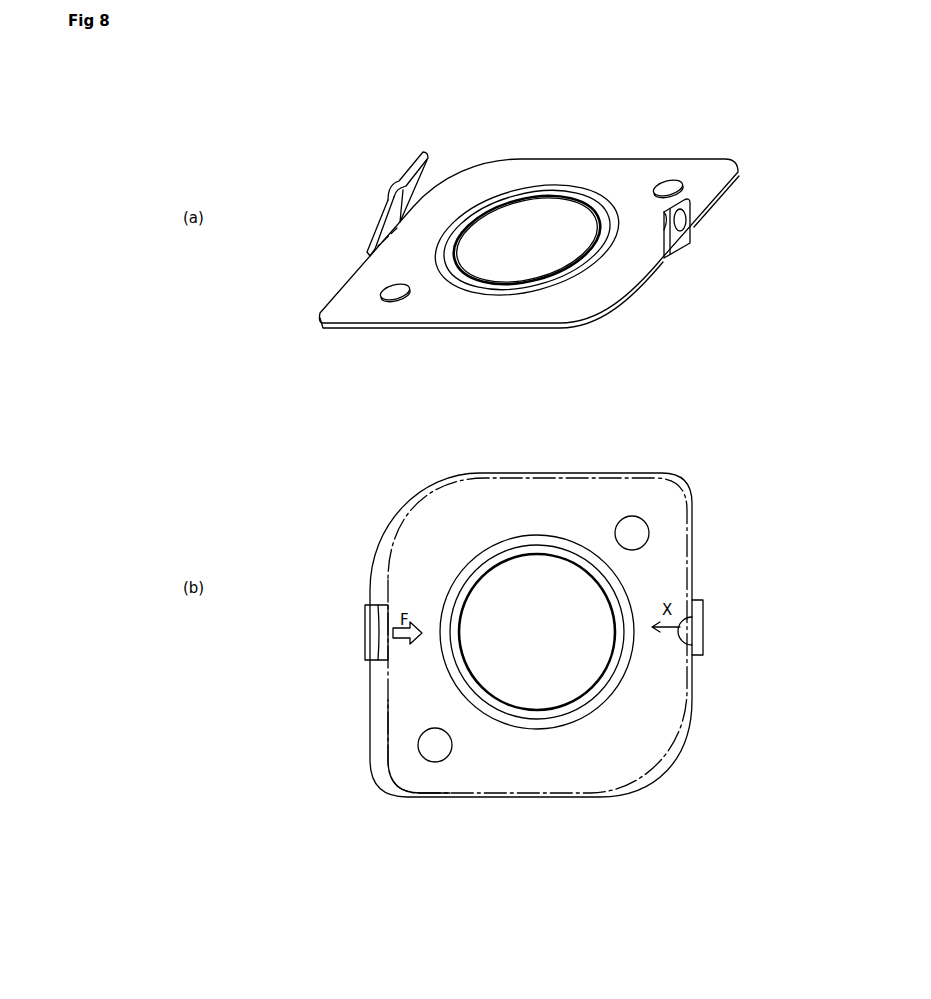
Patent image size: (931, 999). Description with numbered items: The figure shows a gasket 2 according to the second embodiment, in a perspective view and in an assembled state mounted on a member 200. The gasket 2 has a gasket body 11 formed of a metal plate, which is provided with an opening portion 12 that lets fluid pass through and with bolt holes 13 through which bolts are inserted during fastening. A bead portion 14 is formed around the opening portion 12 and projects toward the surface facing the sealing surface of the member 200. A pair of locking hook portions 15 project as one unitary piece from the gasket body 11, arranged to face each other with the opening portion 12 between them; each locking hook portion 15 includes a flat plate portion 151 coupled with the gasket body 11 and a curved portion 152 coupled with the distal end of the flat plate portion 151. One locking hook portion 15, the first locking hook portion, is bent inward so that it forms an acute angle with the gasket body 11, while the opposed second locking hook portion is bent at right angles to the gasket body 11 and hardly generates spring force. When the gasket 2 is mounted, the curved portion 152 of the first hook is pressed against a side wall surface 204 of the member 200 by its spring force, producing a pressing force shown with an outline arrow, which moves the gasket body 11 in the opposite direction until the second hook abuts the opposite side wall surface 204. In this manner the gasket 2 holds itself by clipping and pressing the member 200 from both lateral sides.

The gasket 2 is at (597, 130).
The gasket body 11 is at (635, 165).
The opening portion 12 is at (525, 205).
The bolt holes 13 is at (386, 286).
The bead portion 14 is at (504, 193).
The locking hook portion 15 is at (520, 396).
The flat plate portion 151 is at (393, 188).
The curved portion 152 is at (408, 187).
The member 200 is at (680, 705).
The side wall surface 204 is at (388, 750).